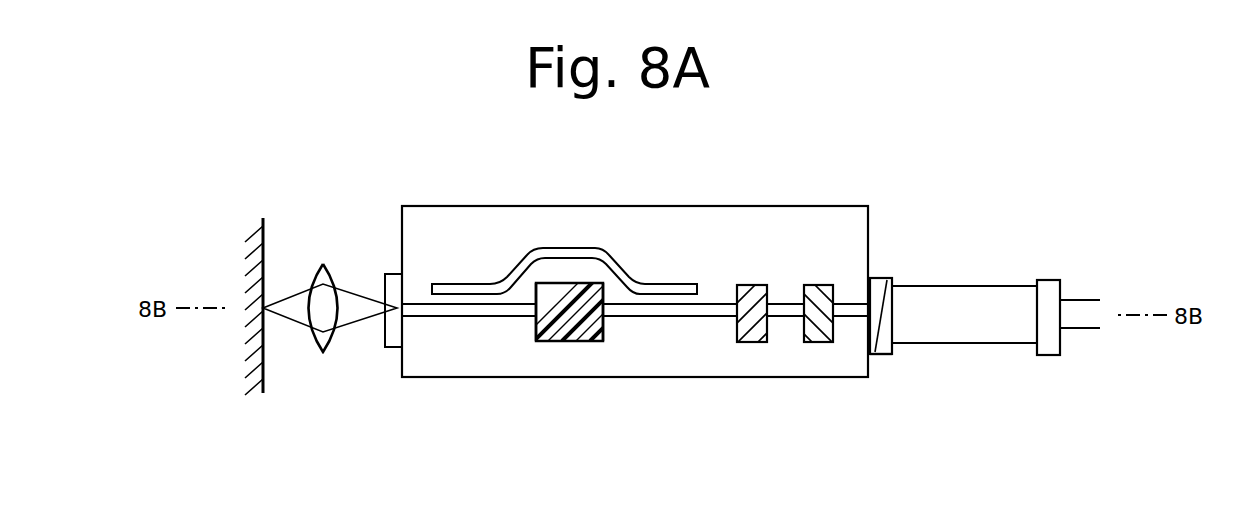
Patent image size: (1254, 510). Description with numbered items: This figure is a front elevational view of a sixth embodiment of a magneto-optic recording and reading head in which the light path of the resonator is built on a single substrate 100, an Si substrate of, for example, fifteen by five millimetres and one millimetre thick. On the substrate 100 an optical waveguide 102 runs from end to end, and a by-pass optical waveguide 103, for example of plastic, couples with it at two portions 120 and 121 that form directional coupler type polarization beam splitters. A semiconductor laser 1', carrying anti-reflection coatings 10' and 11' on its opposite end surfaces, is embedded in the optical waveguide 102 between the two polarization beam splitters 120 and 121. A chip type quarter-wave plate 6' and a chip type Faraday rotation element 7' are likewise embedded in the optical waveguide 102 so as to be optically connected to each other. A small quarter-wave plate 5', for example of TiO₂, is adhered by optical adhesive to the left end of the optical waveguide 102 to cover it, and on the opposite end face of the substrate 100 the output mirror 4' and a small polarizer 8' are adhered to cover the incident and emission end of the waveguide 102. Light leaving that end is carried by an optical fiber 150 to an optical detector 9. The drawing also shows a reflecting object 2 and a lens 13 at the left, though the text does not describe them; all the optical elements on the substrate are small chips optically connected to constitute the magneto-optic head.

The reflecting wall / object 2 is at (263, 238).
The lens 13 is at (325, 352).
The small λ/4 plate 5' is at (377, 281).
The substrate 100 is at (798, 220).
The optical waveguide 102 is at (715, 316).
The directional coupler portion 120 is at (465, 278).
The by-pass optical waveguide 103 is at (572, 248).
The directional coupler portion 121 is at (660, 278).
The semiconductor laser 1' is at (585, 353).
The anti-reflection coating 10' is at (513, 354).
The anti-reflection coating 11' is at (627, 353).
The chip type λ/4 plate 6' is at (747, 275).
The chip type Faraday rotation element 7' is at (824, 274).
The small polarizer 8' is at (891, 288).
The output mirror 4' is at (887, 383).
The optical fiber 150 is at (975, 345).
The optical detector 9 is at (1050, 280).